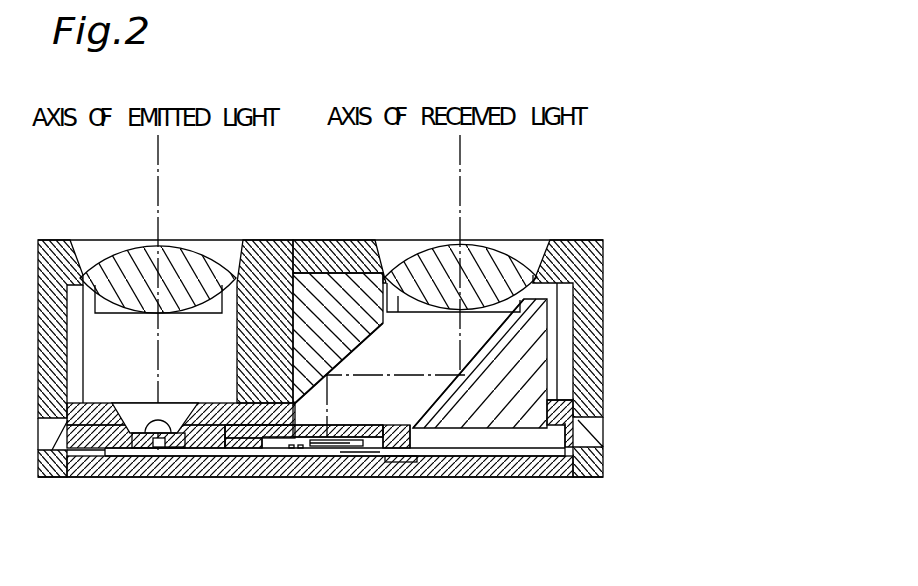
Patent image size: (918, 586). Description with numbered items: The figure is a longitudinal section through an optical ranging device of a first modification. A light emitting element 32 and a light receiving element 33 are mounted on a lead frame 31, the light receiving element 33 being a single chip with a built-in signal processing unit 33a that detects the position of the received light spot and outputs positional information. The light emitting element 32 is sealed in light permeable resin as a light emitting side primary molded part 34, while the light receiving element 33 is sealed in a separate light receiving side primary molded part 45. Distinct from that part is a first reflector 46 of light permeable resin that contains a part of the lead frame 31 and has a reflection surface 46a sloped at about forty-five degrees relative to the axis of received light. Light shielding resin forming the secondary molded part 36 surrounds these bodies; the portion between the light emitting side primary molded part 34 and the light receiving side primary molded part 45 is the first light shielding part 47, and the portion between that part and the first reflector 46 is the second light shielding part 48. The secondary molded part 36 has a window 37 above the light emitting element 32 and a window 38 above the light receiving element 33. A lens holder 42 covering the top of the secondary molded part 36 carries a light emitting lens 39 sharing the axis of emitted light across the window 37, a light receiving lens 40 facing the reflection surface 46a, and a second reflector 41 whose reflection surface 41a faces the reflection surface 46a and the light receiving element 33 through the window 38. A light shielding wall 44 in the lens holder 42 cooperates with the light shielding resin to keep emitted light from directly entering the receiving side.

The lead frame 31 is at (472, 457).
The light emitting element 32 is at (160, 452).
The light receiving element 33 is at (293, 449).
The signal processing unit 33a is at (300, 449).
The light emitting side primary molded part 34 is at (177, 458).
The secondary molded part 36 is at (85, 465).
The window 37 is at (121, 403).
The window 38 is at (296, 413).
The light emitting lens 39 is at (107, 250).
The light receiving lens 40 is at (497, 247).
The second reflector 41 is at (340, 327).
The reflection surface 41a is at (373, 330).
The lens holder 42 is at (605, 318).
The light shielding wall 44 is at (230, 364).
The light receiving side primary molded part 45 is at (358, 458).
The first reflector 46 is at (485, 375).
The reflection surface 46a is at (477, 352).
The first light shielding part 47 is at (203, 455).
The second light shielding part 48 is at (395, 458).